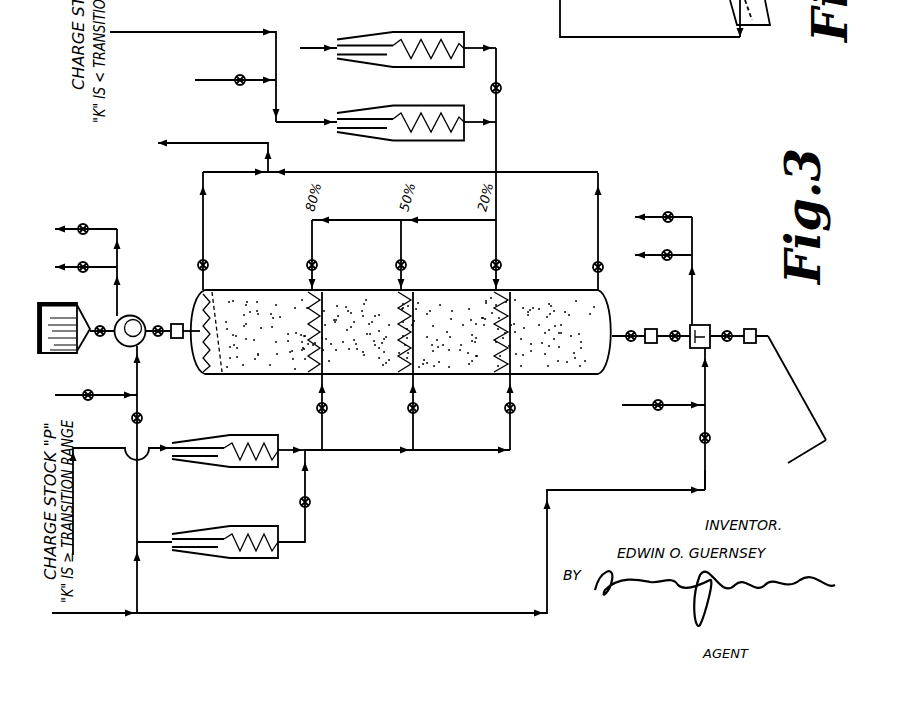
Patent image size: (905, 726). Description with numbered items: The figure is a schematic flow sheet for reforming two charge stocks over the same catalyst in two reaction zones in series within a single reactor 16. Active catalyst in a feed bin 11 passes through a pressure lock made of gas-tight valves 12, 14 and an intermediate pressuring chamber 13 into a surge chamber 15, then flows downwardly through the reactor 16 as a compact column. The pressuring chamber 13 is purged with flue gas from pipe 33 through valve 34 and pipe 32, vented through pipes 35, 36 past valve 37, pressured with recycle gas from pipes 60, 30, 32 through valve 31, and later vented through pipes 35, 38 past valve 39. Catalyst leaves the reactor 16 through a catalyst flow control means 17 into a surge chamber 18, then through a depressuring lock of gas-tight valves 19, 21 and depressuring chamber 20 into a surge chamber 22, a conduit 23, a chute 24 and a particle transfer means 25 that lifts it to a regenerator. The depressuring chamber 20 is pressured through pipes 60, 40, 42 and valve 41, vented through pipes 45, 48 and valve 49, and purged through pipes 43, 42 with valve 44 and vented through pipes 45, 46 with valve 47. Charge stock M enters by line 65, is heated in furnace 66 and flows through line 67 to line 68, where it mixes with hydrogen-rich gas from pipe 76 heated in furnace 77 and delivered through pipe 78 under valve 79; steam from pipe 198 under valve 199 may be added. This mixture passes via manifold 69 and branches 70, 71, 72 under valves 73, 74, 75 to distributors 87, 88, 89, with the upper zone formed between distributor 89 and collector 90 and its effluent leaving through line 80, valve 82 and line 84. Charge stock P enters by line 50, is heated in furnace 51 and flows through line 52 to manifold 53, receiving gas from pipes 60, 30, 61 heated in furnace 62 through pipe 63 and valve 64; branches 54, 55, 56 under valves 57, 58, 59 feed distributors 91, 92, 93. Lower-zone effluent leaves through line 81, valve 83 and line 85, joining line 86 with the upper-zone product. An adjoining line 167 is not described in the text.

The feed bin 11 is at (62, 304).
The gas-tight valve 12 is at (100, 336).
The pressuring chamber 13 is at (131, 316).
The gas-tight valve 14 is at (158, 325).
The surge chamber 15 is at (176, 324).
The reactor 16 is at (262, 375).
The catalyst flow control means 17 is at (631, 331).
The surge chamber 18 is at (651, 329).
The gas-tight valve 19 is at (675, 331).
The depressuring chamber 20 is at (706, 326).
The gas-tight valve 21 is at (727, 331).
The surge chamber 22 is at (750, 329).
The conduit 23 is at (768, 334).
The chute 24 is at (789, 372).
The particle transfer means 25 is at (806, 452).
The pipe 30 is at (138, 575).
The valve 31 is at (142, 418).
The pipe 32 is at (142, 354).
The pipe 33 is at (117, 394).
The valve 34 is at (88, 390).
The pipe 35 is at (119, 247).
The pipe 36 is at (63, 262).
The valve 37 is at (84, 272).
The pipe 38 is at (63, 224).
The valve 39 is at (84, 222).
The pipe 40 is at (707, 462).
The valve 41 is at (699, 440).
The pipe 42 is at (705, 367).
The pipe 43 is at (635, 400).
The valve 44 is at (659, 400).
The pipe 45 is at (694, 226).
The pipe 46 is at (645, 260).
The valve 47 is at (668, 260).
The pipe 48 is at (645, 212).
The valve 49 is at (669, 212).
The line 50 is at (101, 457).
The furnace 51 is at (247, 434).
The line 52 is at (312, 444).
The manifold 53 is at (368, 450).
The branch 54 is at (324, 448).
The branch 55 is at (415, 448).
The branch 56 is at (512, 448).
The valve 57 is at (328, 408).
The valve 58 is at (408, 408).
The valve 59 is at (505, 408).
The pipe 60 is at (100, 612).
The pipe 61 is at (155, 541).
The furnace 62 is at (240, 525).
The pipe 63 is at (300, 545).
The valve 64 is at (311, 502).
The line 65 is at (307, 124).
The furnace 66 is at (385, 141).
The line 67 is at (476, 124).
The line 68 is at (498, 150).
The manifold 69 is at (455, 222).
The manifold branch 70 is at (498, 240).
The manifold branch 71 is at (403, 238).
The manifold branch 72 is at (314, 238).
The valve 73 is at (491, 265).
The valve 74 is at (396, 265).
The valve 75 is at (307, 265).
The pipe 76 is at (323, 50).
The furnace 77 is at (415, 68).
The pipe 78 is at (495, 46).
The valve 79 is at (502, 88).
The line 80 is at (206, 275).
The line 81 is at (596, 288).
The valve 82 is at (198, 258).
The valve 83 is at (598, 260).
The line 84 is at (238, 174).
The line 85 is at (353, 174).
The line 86 is at (185, 144).
The distributor 87 is at (494, 316).
The distributor 88 is at (397, 316).
The distributor 89 is at (308, 316).
The collector 90 is at (205, 376).
The distributor 91 is at (324, 340).
The distributor 92 is at (414, 340).
The distributor 93 is at (511, 340).
The line 167 is at (665, 36).
The pipe 198 is at (216, 82).
The valve 199 is at (241, 86).